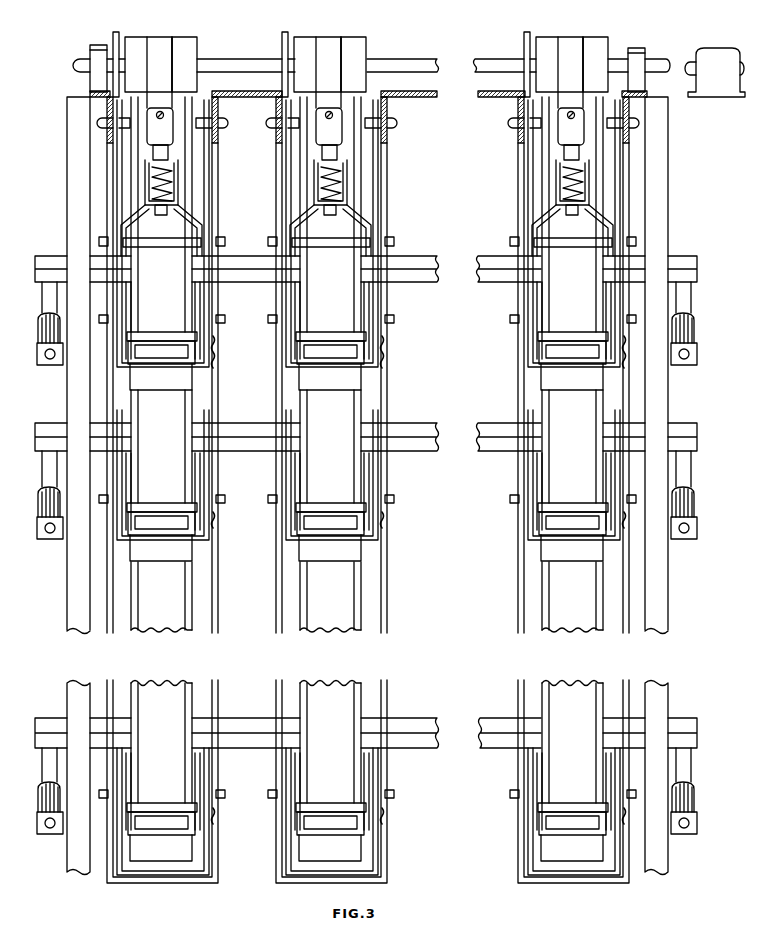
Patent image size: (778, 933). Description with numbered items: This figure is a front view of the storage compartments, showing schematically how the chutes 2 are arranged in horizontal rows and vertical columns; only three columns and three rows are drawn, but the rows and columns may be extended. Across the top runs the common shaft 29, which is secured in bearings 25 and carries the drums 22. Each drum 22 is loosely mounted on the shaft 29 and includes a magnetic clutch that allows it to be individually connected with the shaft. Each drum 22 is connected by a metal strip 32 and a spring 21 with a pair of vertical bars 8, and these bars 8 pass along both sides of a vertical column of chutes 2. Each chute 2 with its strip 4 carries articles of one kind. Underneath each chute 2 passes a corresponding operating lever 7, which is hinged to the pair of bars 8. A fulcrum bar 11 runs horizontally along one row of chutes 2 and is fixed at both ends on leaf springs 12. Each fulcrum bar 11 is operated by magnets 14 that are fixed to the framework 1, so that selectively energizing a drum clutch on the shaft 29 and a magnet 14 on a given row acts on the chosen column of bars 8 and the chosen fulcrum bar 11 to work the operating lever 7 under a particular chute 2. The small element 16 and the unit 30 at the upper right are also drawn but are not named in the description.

The framework 1 is at (70, 182).
The chute 2 is at (160, 390).
The strip 4 is at (160, 332).
The operating lever 7 is at (287, 298).
The vertical bars 8 is at (110, 374).
The fulcrum bar 11 is at (60, 262).
The leaf springs 12 is at (45, 297).
The magnets 14 is at (38, 339).
The wire 16 is at (216, 349).
The spring 21 is at (166, 182).
The drum 22 is at (190, 43).
The bearings 25 is at (98, 45).
The common shaft 29 is at (233, 62).
The motor 30 is at (718, 50).
The metal strip 32 is at (160, 37).